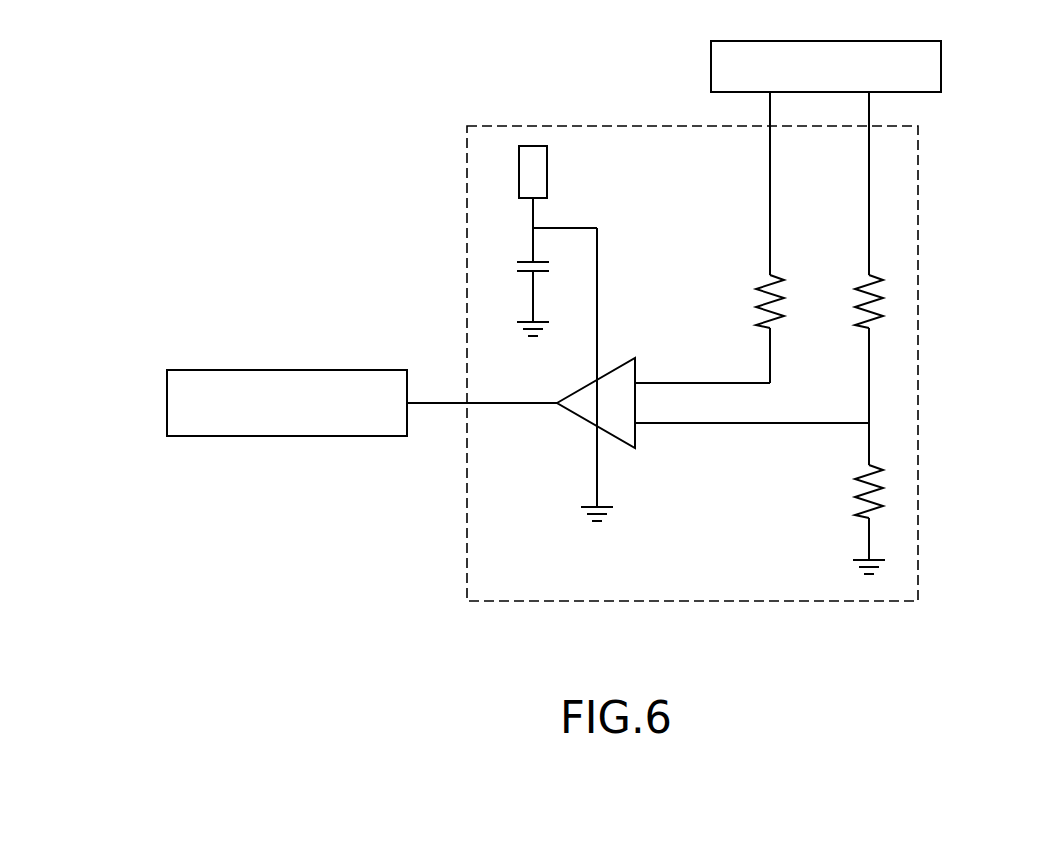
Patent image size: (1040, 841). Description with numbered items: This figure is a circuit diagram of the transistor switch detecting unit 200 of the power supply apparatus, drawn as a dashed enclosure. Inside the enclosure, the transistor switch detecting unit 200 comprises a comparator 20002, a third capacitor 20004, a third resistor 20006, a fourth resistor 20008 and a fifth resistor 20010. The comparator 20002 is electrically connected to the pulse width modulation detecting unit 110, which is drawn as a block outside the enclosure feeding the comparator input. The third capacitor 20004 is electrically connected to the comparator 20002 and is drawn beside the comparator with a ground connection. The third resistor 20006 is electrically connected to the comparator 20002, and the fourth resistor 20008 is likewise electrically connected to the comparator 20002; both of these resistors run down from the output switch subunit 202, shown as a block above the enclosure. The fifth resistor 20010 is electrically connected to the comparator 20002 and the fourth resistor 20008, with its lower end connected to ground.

The pulse width modulation detecting unit 110 is at (250, 377).
The transistor switch detecting unit 200 is at (606, 148).
The output switch subunit 202 is at (932, 70).
The comparator 20002 is at (587, 408).
The third capacitor 20004 is at (508, 268).
The third resistor 20006 is at (758, 305).
The fourth resistor 20008 is at (893, 308).
The fifth resistor 20010 is at (887, 492).